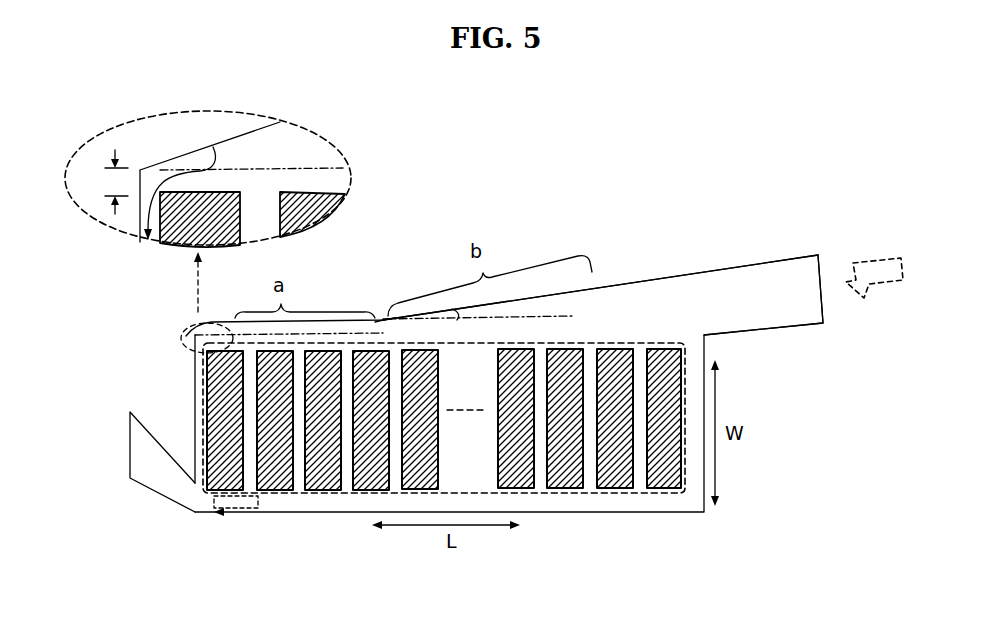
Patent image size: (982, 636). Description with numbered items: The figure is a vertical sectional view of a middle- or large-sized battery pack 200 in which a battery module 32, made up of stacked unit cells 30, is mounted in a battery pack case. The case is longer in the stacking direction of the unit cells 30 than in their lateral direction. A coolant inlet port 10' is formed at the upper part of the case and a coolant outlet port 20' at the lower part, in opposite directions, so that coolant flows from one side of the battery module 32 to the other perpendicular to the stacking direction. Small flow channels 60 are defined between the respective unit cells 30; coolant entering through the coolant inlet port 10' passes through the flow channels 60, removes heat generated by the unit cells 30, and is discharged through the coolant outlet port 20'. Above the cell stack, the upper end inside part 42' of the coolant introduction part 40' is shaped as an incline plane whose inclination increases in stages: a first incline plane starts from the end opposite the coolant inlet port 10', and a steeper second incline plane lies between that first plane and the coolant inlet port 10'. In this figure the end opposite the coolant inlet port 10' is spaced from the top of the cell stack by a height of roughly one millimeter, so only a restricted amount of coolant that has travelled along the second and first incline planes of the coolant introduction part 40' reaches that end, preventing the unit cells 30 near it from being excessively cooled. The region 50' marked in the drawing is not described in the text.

The middle- or large-sized battery pack 200 is at (76, 121).
The coolant inlet port 10' is at (816, 295).
The coolant outlet port 20' is at (132, 469).
The unit cells 30 is at (280, 490).
The battery module 32 is at (567, 490).
The coolant introduction part 40' is at (600, 264).
The upper end inside part 42' is at (403, 274).
The fin region 50' is at (444, 476).
The flow channels 60 is at (638, 470).